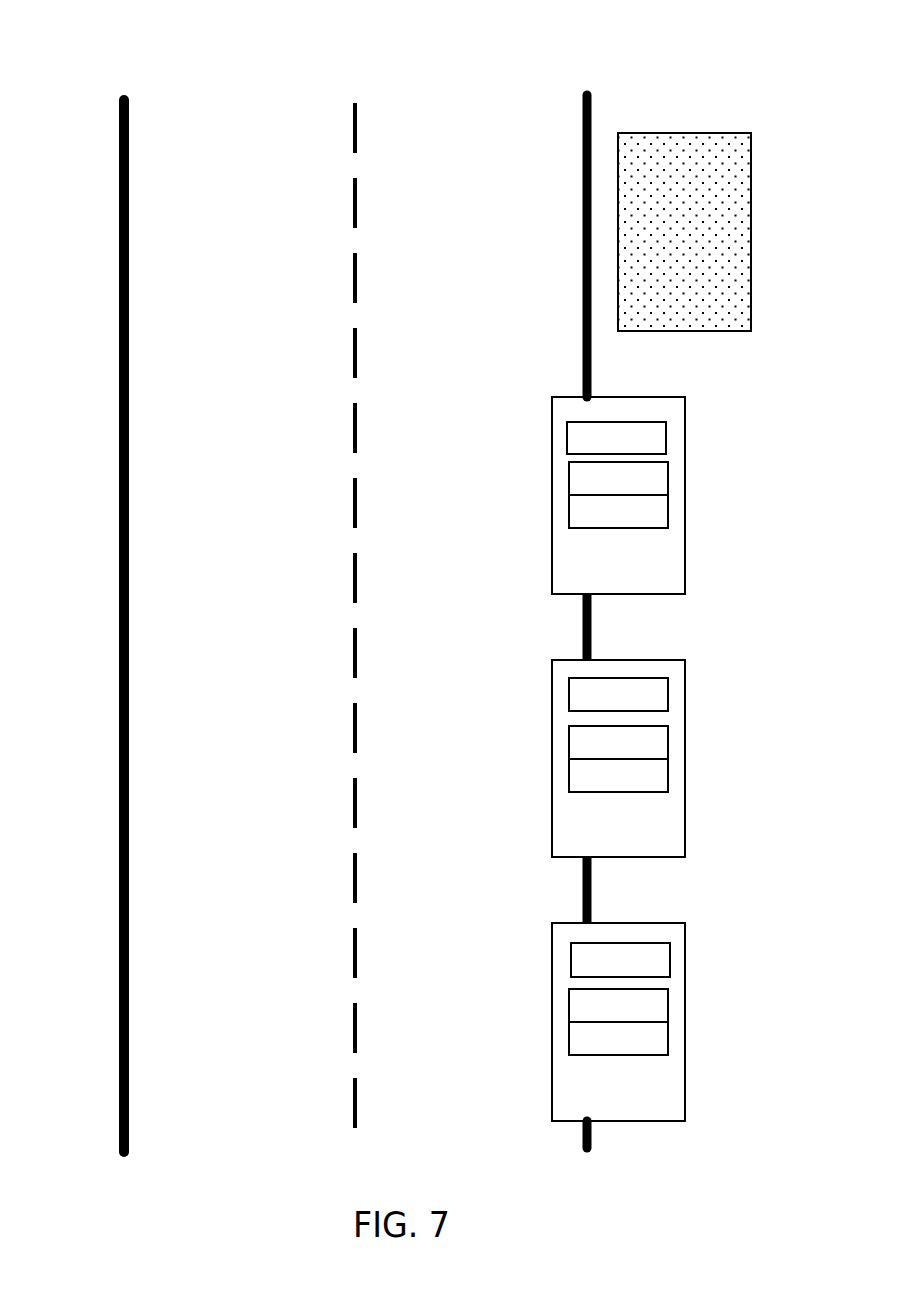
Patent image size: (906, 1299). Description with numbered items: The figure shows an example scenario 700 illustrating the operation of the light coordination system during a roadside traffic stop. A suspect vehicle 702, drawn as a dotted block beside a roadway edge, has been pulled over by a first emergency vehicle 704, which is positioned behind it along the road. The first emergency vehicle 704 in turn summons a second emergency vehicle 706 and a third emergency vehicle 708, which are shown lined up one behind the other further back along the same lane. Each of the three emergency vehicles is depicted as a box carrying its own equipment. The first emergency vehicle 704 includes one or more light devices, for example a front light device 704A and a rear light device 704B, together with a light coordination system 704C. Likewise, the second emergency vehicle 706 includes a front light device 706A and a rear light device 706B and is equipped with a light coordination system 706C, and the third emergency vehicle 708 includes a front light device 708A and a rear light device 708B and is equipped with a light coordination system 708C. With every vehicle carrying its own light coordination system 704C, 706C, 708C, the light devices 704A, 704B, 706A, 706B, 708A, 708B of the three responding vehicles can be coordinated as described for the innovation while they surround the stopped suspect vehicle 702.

The example scenario 700 is at (139, 40).
The suspect vehicle 702 is at (717, 133).
The first emergency vehicle 704 is at (651, 397).
The front light device 704A is at (618, 478).
The rear light device 704B is at (618, 511).
The light coordination system 704C is at (616, 438).
The second emergency vehicle 706 is at (651, 660).
The front light device 706A is at (618, 742).
The rear light device 706B is at (618, 775).
The light coordination system 706C is at (618, 694).
The third emergency vehicle 708 is at (651, 923).
The front light device 708A is at (618, 1005).
The rear light device 708B is at (618, 1038).
The light coordination system 708C is at (620, 960).